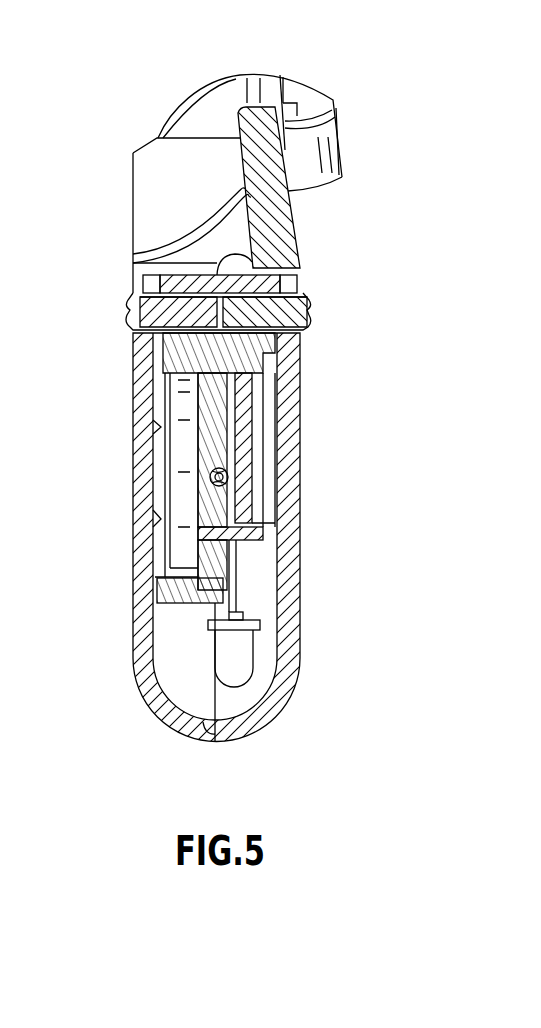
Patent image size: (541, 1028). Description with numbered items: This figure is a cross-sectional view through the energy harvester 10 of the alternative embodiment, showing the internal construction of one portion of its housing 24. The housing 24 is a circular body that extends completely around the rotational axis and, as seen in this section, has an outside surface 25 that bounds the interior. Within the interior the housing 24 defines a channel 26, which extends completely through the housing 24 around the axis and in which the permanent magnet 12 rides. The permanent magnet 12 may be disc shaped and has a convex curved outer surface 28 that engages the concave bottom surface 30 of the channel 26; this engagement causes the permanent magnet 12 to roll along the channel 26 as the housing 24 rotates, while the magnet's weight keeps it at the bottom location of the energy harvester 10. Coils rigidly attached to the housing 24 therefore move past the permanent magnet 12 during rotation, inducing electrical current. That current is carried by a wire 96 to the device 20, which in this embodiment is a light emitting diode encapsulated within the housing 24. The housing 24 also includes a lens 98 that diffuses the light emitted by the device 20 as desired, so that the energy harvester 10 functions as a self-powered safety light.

The energy harvester 10 is at (130, 63).
The permanent magnet 12 is at (170, 437).
The device 20 is at (238, 650).
The housing 24 is at (293, 270).
The outside surface 25 is at (128, 366).
The channel 26 is at (153, 566).
The curved outer surface 28 is at (172, 492).
The concave bottom surface 30 is at (182, 568).
The wire 96 is at (224, 484).
The lens 98 is at (254, 722).